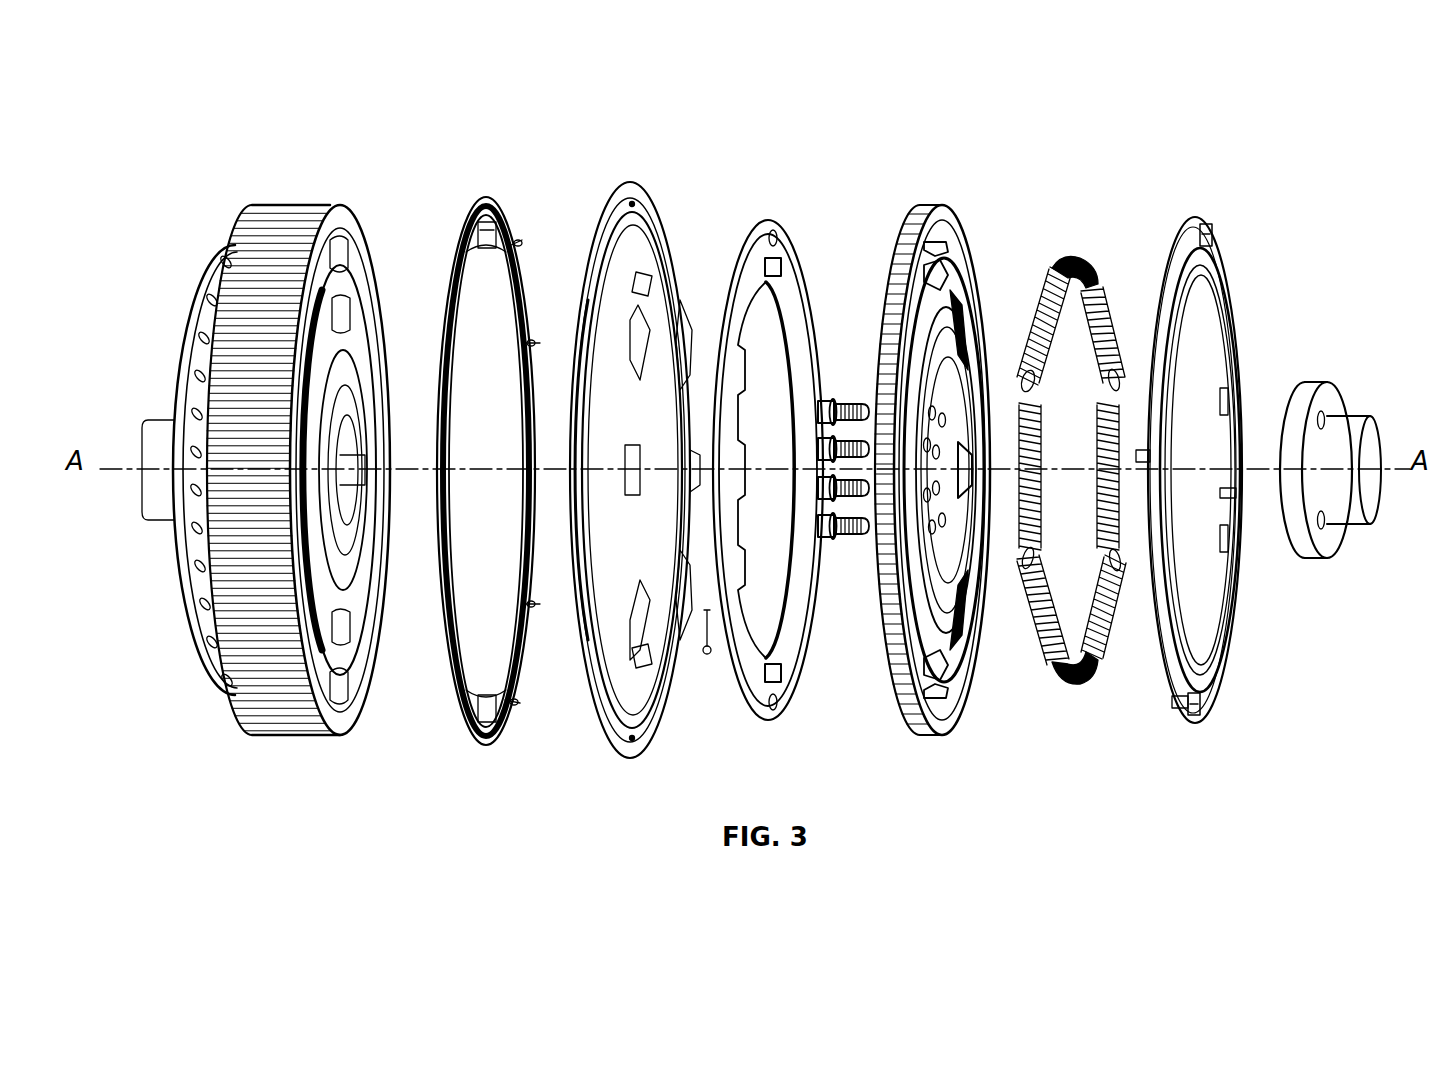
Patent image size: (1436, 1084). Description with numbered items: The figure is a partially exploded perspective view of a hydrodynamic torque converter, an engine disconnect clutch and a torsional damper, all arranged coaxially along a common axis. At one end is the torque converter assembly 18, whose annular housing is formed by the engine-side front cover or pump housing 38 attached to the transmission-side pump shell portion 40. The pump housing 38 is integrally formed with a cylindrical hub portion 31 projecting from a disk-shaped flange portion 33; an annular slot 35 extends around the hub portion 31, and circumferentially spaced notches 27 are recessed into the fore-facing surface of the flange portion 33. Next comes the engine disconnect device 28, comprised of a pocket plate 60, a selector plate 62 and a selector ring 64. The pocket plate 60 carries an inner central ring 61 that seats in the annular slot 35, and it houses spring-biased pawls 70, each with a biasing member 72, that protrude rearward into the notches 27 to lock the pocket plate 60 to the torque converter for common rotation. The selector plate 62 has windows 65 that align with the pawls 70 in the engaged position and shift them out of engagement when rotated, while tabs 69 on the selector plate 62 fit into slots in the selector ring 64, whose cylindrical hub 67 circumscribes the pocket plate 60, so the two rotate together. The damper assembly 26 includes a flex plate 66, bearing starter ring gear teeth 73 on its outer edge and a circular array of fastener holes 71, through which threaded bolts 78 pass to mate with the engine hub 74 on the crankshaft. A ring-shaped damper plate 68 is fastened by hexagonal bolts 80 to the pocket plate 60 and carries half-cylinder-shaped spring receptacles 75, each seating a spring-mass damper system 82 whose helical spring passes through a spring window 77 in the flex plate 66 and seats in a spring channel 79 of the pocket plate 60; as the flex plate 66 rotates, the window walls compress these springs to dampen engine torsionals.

The torque converter assembly 18 is at (236, 152).
The pump shell portion 40 is at (200, 285).
The front cover 38 is at (278, 204).
The annular slot 35 is at (334, 212).
The notches 27 is at (346, 242).
The hub portion 31 is at (375, 650).
The flange portion 33 is at (350, 730).
The engine disconnect device 28 is at (572, 152).
The selector plate 62 is at (480, 204).
The windows 65 is at (496, 236).
The tabs 69 is at (522, 243).
The selector ring 64 is at (618, 194).
The cylindrical hub 67 is at (640, 214).
The pawls 70 is at (682, 282).
The biasing member 72 is at (710, 625).
The pocket plate 60 is at (770, 224).
The central ring 61 is at (800, 615).
The spring channels 79 is at (782, 262).
The threaded bolts 78 is at (842, 396).
The damper assembly 26 is at (985, 152).
The flex plate 66 is at (932, 204).
The gear teeth 73 is at (893, 250).
The spring windows 77 is at (937, 270).
The fastener holes 71 is at (950, 420).
The spring-mass damper systems 82 is at (1068, 262).
The damper plate 68 is at (1198, 226).
The spring receptacles 75 is at (1228, 272).
The hexagonal bolts 80 is at (1212, 232).
The engine hub 74 is at (1310, 382).